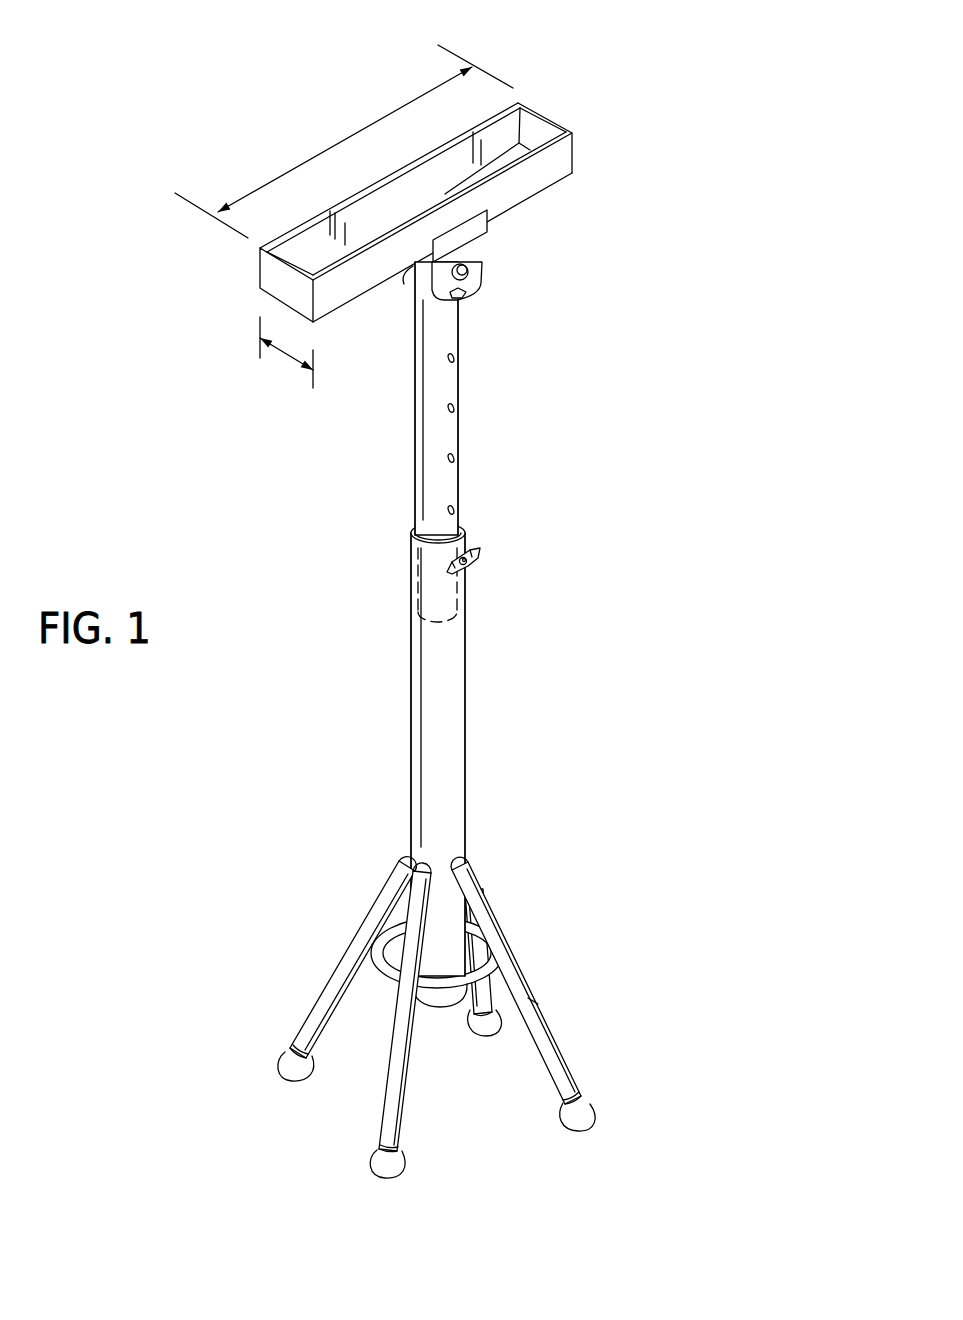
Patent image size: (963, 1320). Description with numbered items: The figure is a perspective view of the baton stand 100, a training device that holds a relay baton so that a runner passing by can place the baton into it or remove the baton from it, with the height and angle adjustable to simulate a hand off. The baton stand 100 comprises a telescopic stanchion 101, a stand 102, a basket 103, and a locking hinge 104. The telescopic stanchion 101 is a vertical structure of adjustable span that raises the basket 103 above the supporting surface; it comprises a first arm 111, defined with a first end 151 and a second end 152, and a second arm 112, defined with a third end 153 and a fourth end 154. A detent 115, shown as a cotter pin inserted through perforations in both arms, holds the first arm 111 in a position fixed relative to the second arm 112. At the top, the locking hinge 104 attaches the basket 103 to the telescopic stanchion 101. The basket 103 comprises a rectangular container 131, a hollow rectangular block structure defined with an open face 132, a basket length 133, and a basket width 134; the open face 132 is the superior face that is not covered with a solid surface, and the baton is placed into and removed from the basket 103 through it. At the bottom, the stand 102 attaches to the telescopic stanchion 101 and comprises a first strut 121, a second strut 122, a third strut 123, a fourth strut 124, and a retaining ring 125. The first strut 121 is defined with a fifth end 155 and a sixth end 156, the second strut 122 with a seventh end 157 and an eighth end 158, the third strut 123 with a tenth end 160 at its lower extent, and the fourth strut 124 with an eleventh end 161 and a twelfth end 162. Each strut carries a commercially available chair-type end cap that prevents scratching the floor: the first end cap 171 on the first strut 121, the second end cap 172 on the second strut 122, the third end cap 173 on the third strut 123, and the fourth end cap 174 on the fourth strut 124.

The baton stand 100 is at (118, 110).
The telescopic stanchion 101 is at (498, 700).
The stand 102 is at (440, 983).
The basket 103 is at (575, 152).
The locking hinge 104 is at (483, 252).
The first arm 111 is at (447, 764).
The second arm 112 is at (458, 420).
The detent 115 is at (482, 552).
The first strut 121 is at (380, 1135).
The second strut 122 is at (313, 1050).
The third strut 123 is at (477, 1043).
The fourth strut 124 is at (567, 1073).
The retaining ring 125 is at (486, 952).
The rectangular container 131 is at (547, 115).
The open face 132 is at (508, 132).
The basket length 133 is at (344, 141).
The basket width 134 is at (287, 357).
The first end 151 is at (433, 1007).
The second end 152 is at (410, 540).
The third end 153 is at (441, 622).
The fourth end 154 is at (413, 263).
The fifth end 155 is at (438, 867).
The sixth end 156 is at (398, 1147).
The seventh end 157 is at (410, 863).
The eighth end 158 is at (295, 1040).
The tenth end 160 is at (537, 1002).
The eleventh end 161 is at (470, 873).
The twelfth end 162 is at (580, 1097).
The first end cap 171 is at (390, 1177).
The second end cap 172 is at (285, 1080).
The third end cap 173 is at (468, 1030).
The fourth end cap 174 is at (588, 1129).